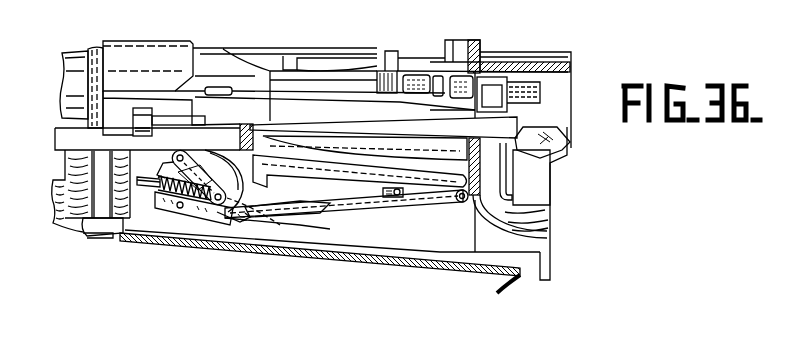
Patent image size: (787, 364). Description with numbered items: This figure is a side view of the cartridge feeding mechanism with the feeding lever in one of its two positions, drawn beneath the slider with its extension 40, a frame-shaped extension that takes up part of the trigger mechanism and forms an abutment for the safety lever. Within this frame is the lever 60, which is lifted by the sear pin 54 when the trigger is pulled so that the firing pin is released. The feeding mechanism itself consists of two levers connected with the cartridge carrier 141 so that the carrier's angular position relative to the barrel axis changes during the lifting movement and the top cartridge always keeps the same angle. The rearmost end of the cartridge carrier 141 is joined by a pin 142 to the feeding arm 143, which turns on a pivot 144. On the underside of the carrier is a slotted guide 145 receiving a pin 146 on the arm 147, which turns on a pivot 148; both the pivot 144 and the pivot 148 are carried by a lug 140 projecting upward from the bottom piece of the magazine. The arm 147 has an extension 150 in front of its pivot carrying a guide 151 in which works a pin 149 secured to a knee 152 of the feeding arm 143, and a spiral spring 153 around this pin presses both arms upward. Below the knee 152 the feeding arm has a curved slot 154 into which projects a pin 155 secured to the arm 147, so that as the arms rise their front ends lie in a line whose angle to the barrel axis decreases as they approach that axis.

The extension 40 is at (383, 127).
The sear pin 54 is at (498, 172).
The lever 60 is at (523, 197).
The lug 140 is at (150, 160).
The cartridge carrier 141 is at (328, 165).
The pin 142 is at (500, 195).
The feeding arm 143 is at (427, 202).
The pivot 144 is at (180, 155).
The slotted guide 145 is at (462, 150).
The pin 146 is at (394, 198).
The arm 147 is at (323, 203).
The pivot 148 is at (181, 208).
The pin 149 is at (141, 153).
The extension 150 is at (218, 217).
The guide 151 is at (166, 134).
The knee 152 is at (227, 195).
The spiral spring 153 is at (208, 173).
The curved slot 154 is at (290, 253).
The pin 155 is at (320, 229).